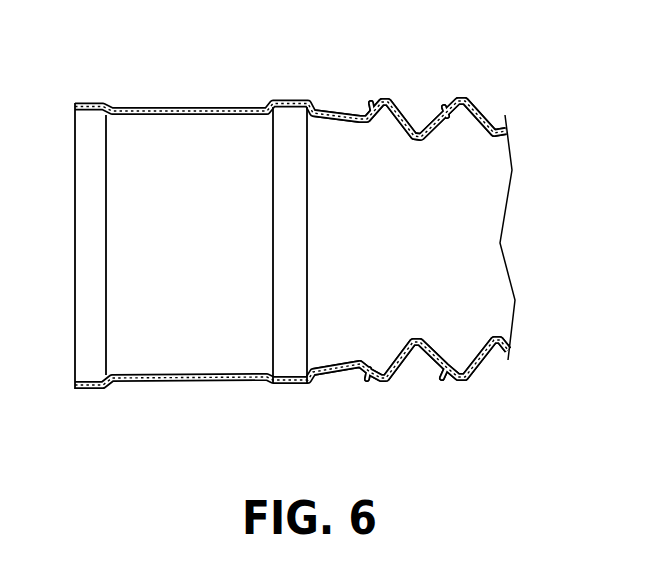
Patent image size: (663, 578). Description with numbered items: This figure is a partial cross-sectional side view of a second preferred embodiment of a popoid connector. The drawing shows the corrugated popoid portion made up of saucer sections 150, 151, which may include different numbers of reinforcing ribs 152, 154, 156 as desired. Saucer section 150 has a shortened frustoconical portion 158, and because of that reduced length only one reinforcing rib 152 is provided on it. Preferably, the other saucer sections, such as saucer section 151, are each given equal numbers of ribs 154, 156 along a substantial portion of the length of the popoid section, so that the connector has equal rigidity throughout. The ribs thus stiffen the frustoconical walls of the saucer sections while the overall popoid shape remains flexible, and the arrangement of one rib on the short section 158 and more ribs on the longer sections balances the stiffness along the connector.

The saucer section 150 is at (395, 112).
The saucer section 151 is at (476, 112).
The reinforcing rib 152 is at (368, 378).
The rib 154 is at (438, 364).
The rib 156 is at (461, 379).
The frustoconical portion 158 is at (358, 115).